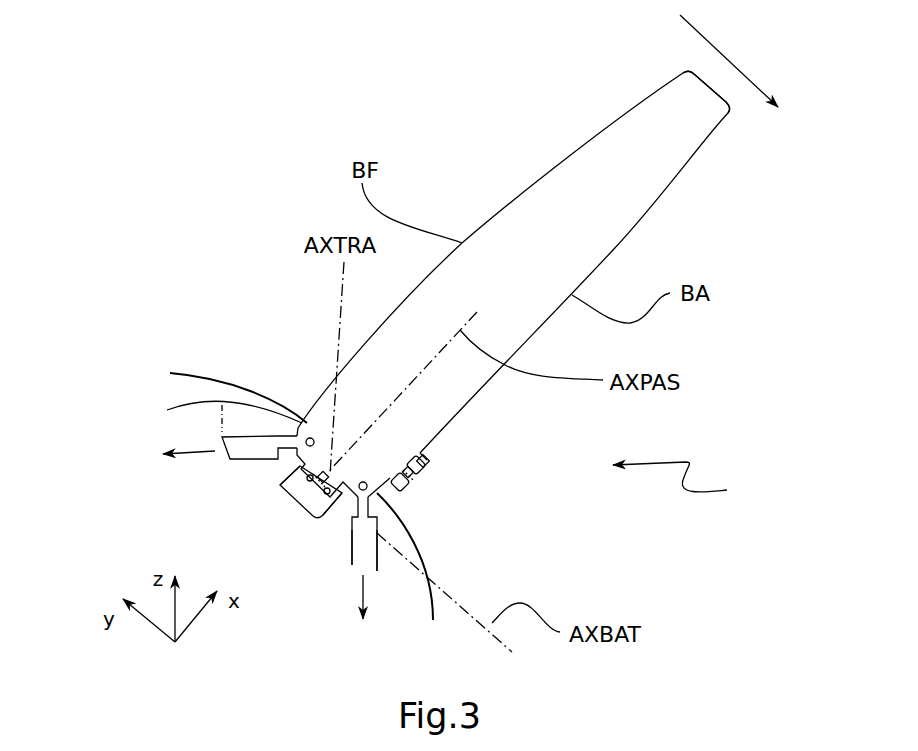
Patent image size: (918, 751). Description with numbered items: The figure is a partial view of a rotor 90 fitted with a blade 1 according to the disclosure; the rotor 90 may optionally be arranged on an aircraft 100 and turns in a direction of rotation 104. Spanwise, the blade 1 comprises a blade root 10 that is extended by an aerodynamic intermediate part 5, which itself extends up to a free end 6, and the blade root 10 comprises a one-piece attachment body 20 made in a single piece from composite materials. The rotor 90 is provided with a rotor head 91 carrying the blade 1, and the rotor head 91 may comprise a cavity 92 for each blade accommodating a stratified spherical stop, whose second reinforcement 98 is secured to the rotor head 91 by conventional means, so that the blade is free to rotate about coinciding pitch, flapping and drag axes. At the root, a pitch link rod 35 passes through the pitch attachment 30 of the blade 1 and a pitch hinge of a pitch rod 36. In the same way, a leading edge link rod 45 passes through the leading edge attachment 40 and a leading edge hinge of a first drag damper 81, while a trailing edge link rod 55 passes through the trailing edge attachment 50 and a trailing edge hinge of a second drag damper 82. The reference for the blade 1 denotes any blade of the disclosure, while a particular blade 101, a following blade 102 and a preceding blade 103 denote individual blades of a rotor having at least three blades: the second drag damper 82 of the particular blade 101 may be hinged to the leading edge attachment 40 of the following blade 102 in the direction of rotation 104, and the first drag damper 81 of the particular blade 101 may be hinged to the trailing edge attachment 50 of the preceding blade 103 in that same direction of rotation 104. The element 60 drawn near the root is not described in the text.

The blade 1 is at (490, 127).
The particular blade 101 is at (520, 70).
The aerodynamic intermediate part 5 is at (483, 195).
The free end 6 is at (688, 68).
The blade root 10 is at (295, 387).
The one-piece attachment body 20 is at (219, 409).
The pitch attachment 30 is at (445, 474).
The pitch link rod 35 is at (420, 453).
The pitch rod 36 is at (405, 487).
The leading edge attachment 40 is at (364, 481).
The leading edge link rod 45 is at (380, 502).
The trailing edge attachment 50 is at (314, 444).
The trailing edge link rod 55 is at (320, 468).
The actuator body 60 is at (282, 488).
The first drag damper 81 is at (367, 547).
The second drag damper 82 is at (252, 460).
The rotor 90 is at (160, 330).
The rotor head 91 is at (220, 380).
The cavity 92 is at (317, 505).
The second reinforcement 98 is at (338, 520).
The aircraft 100 is at (692, 481).
The following blade 102 is at (105, 467).
The preceding blade 103 is at (347, 656).
The direction of rotation 104 is at (729, 61).